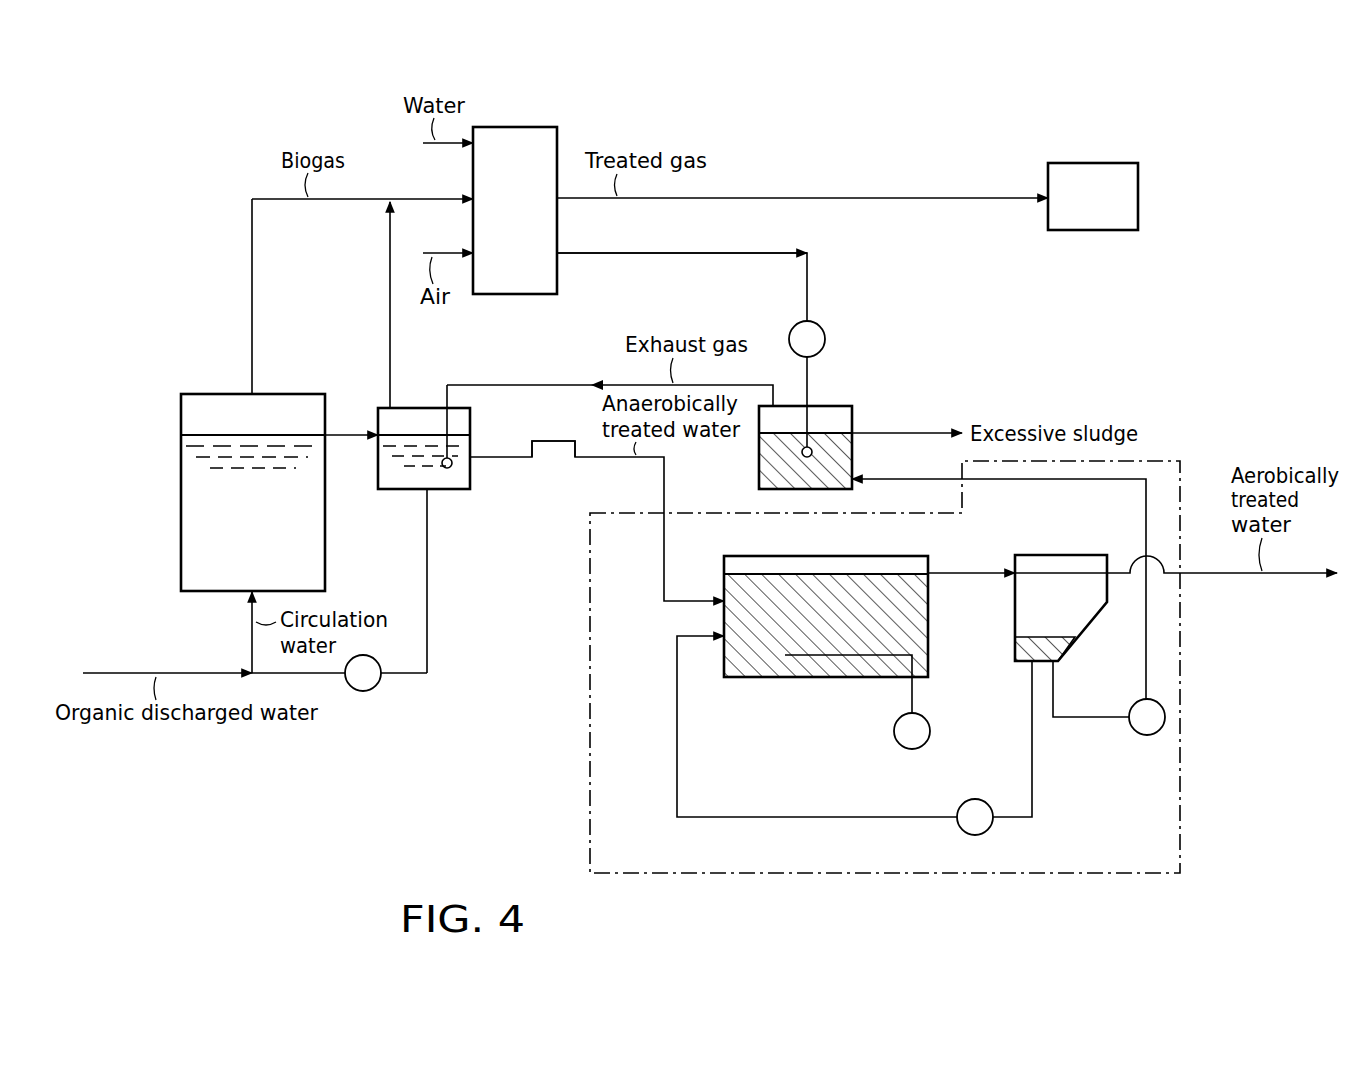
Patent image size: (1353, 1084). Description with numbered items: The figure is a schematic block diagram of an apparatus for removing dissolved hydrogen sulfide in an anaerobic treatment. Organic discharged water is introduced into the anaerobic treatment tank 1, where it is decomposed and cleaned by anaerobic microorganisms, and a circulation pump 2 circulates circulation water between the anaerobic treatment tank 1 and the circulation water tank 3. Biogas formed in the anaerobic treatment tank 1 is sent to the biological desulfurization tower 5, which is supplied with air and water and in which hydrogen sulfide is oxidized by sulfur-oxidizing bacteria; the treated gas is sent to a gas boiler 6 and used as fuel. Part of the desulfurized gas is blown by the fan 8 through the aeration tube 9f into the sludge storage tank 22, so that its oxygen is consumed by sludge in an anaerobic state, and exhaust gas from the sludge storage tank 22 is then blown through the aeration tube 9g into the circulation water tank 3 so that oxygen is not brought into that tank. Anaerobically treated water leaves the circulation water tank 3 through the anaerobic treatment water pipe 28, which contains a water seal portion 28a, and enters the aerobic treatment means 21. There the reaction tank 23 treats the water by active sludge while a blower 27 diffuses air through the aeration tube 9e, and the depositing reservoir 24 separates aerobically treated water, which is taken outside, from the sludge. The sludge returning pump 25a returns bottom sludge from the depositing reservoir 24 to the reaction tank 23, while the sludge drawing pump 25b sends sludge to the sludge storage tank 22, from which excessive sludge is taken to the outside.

The anaerobic treatment tank 1 is at (180, 478).
The circulation pump 2 is at (370, 690).
The circulation water tank 3 is at (441, 490).
The biological desulfurization tower 5 is at (513, 127).
The gas boiler 6 is at (1092, 163).
The fan 8 is at (825, 339).
The aeration tube 9g is at (450, 468).
The aeration tube 9f is at (813, 452).
The aeration tube 9e is at (824, 657).
The aerobic treatment means 21 is at (590, 792).
The sludge storage tank 22 is at (852, 412).
The reaction tank 23 is at (724, 621).
The depositing reservoir 24 is at (1050, 555).
The sludge returning pump 25a is at (975, 836).
The sludge drawing pump 25b is at (1165, 717).
The blower 27 is at (930, 731).
The anaerobic treatment water pipe 28 is at (497, 455).
The water seal portion 28a is at (553, 447).